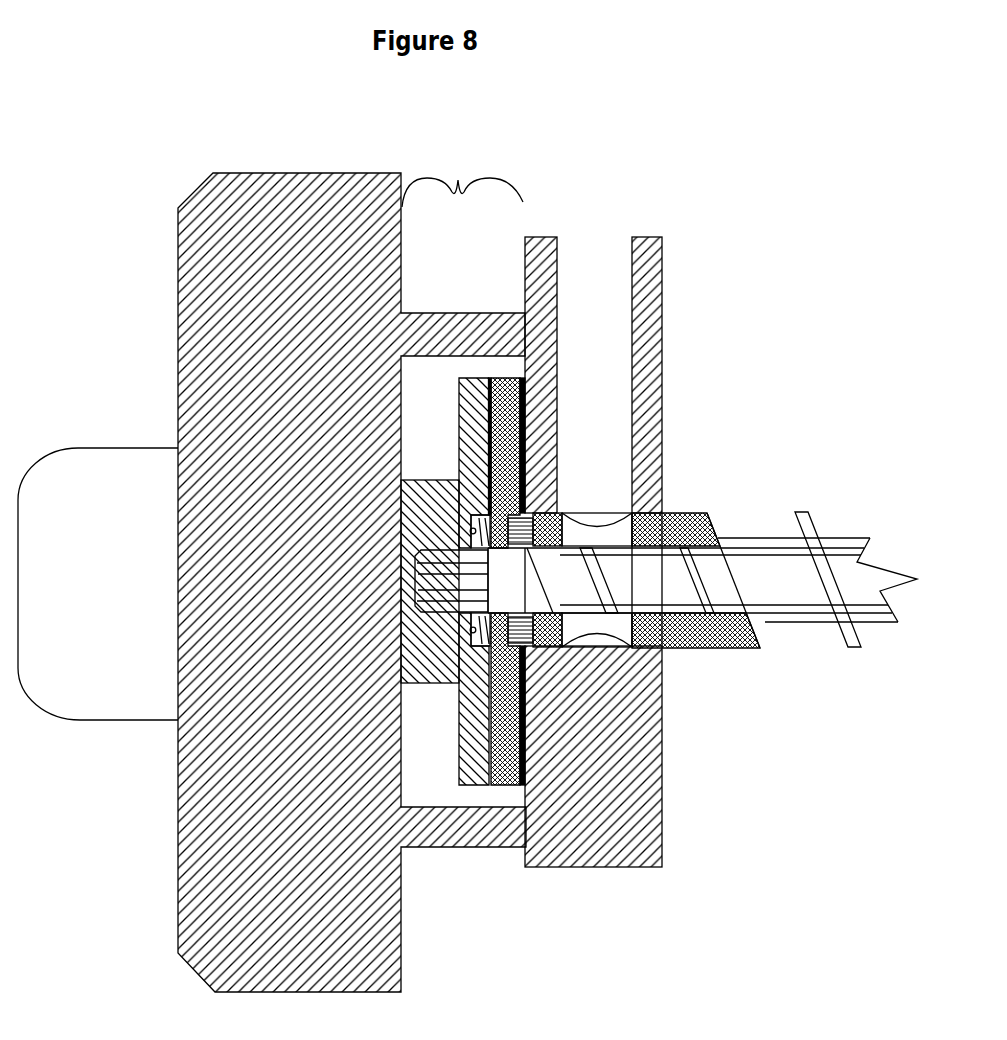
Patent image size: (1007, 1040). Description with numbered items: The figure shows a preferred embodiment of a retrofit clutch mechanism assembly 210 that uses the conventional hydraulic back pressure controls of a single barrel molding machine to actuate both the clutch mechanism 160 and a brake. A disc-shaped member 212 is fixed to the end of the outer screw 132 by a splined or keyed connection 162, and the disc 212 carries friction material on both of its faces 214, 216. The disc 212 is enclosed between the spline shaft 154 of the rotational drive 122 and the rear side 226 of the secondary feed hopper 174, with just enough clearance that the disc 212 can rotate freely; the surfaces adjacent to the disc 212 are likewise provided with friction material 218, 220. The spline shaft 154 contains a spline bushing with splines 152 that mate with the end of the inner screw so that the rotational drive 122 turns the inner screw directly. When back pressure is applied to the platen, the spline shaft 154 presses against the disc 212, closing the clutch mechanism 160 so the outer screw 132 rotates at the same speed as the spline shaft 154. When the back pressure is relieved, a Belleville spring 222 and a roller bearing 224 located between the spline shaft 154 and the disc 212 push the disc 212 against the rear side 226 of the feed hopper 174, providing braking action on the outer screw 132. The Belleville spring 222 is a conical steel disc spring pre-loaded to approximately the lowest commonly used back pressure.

The rotational drive 122 is at (63, 450).
The outer screw 132 is at (703, 650).
The splines of spline bushing 152 is at (406, 517).
The spline shaft 154 is at (460, 772).
The clutch mechanism 160 is at (462, 178).
The splines 162 is at (553, 476).
The secondary feed hopper 174 is at (598, 265).
The retrofit clutch mechanism assembly 210 is at (806, 963).
The disc-shaped member 212 is at (507, 787).
The friction material face 214 is at (490, 378).
The friction material face 216 is at (508, 378).
The friction material 218 is at (487, 378).
The friction material 220 is at (557, 362).
The Belleville spring 222 is at (525, 672).
The roller bearing 224 is at (467, 633).
The rear side of feed hopper 226 is at (512, 792).